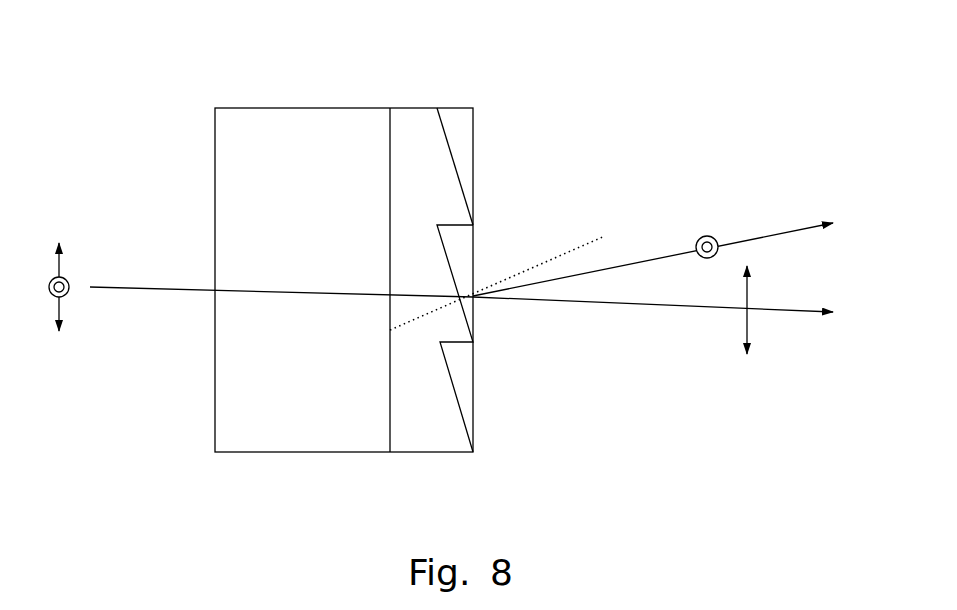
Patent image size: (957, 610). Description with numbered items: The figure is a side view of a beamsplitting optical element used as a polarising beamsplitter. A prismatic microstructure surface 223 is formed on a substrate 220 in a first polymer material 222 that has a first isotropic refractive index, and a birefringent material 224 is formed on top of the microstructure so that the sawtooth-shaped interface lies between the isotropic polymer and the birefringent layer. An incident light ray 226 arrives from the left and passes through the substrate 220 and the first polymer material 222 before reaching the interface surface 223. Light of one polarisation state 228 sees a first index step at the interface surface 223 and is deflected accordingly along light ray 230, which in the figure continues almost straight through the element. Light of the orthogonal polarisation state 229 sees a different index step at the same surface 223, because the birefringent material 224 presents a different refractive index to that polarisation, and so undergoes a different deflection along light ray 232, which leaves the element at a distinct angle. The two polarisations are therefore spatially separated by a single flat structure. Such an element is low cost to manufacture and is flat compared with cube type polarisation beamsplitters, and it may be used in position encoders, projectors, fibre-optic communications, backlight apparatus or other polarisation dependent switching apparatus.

The substrate 220 is at (293, 108).
The first polymer material 222 is at (415, 135).
The prismatic microstructure surface 223 is at (452, 207).
The birefringent material 224 is at (460, 133).
The incident light ray 226 is at (145, 290).
The polarisation state 228 is at (65, 248).
The orthogonal polarisation state 229 is at (69, 280).
The light ray 230 is at (664, 310).
The light ray 232 is at (664, 246).